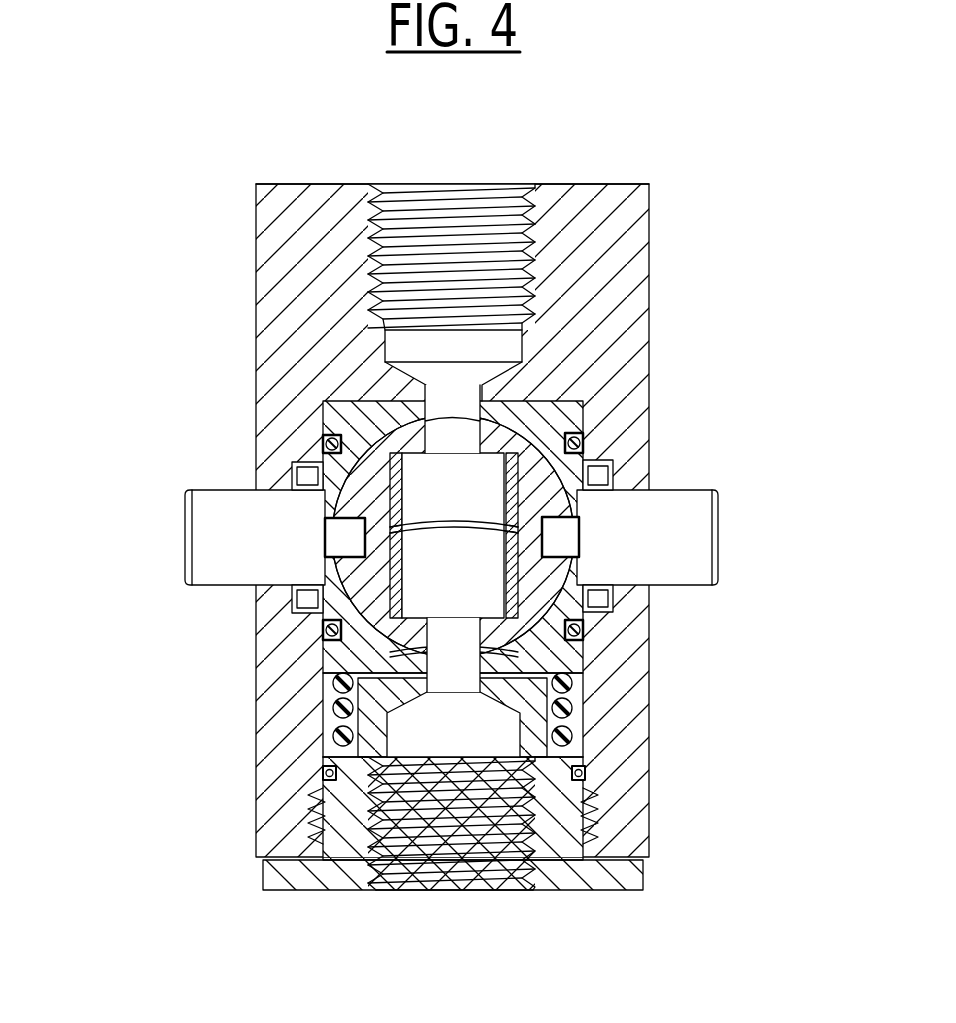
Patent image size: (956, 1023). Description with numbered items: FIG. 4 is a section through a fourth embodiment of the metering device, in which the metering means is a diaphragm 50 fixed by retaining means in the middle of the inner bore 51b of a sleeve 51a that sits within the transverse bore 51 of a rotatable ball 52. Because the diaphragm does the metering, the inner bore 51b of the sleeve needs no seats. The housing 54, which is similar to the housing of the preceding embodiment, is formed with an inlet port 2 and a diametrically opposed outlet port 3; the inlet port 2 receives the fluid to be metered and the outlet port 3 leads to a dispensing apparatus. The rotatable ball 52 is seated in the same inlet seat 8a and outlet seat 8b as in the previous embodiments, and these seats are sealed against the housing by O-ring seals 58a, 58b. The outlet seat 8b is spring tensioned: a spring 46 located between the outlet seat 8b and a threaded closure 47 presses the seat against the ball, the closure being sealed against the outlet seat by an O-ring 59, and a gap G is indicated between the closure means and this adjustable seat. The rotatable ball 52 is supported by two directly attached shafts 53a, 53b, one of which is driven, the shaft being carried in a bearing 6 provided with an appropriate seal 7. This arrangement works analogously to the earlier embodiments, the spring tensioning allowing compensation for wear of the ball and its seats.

The inlet port 2 is at (421, 236).
The housing 54 is at (585, 257).
The sleeve 51a is at (413, 435).
The diaphragm 50 is at (442, 518).
The inlet seat 8a is at (540, 423).
The O-ring seal 58a is at (583, 437).
The seal 7 is at (613, 472).
The shaft 53a is at (218, 540).
The shaft 53b is at (685, 540).
The bearing 6 is at (625, 583).
The rotatable ball 52 is at (315, 600).
The inner bore 51b is at (553, 638).
The O-ring seal 58b is at (323, 637).
The transverse bore 51 is at (483, 570).
The outlet seat 8b is at (323, 678).
The spring 46 is at (577, 762).
The O-ring 59 is at (331, 780).
The outlet port 3 is at (480, 862).
The gap G is at (533, 674).
The threaded closure 47 is at (593, 873).